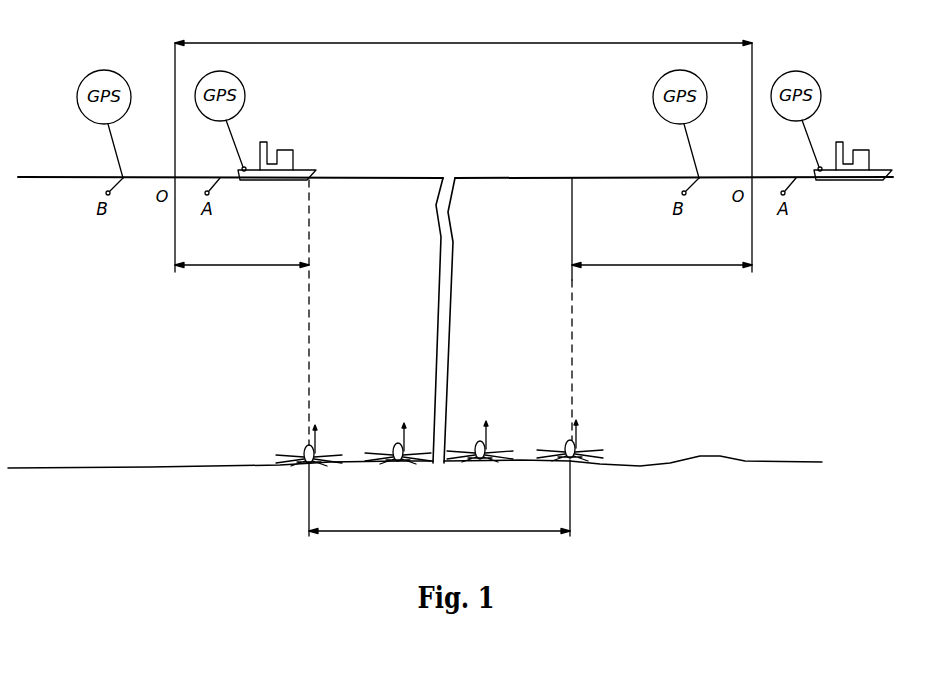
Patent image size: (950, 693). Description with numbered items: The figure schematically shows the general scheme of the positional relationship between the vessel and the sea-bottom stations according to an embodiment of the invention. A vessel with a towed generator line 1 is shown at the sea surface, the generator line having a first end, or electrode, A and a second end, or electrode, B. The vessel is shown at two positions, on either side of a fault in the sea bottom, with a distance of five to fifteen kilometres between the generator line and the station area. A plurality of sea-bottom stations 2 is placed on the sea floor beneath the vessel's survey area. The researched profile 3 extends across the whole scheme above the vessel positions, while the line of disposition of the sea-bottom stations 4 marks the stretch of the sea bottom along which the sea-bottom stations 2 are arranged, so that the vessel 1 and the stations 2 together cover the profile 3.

The vessel with a towed generator line 1 is at (263, 142).
The sea-bottom stations 2 is at (483, 441).
The researched profile 3 is at (463, 140).
The line of disposition of the sea-bottom stations 4 is at (439, 498).